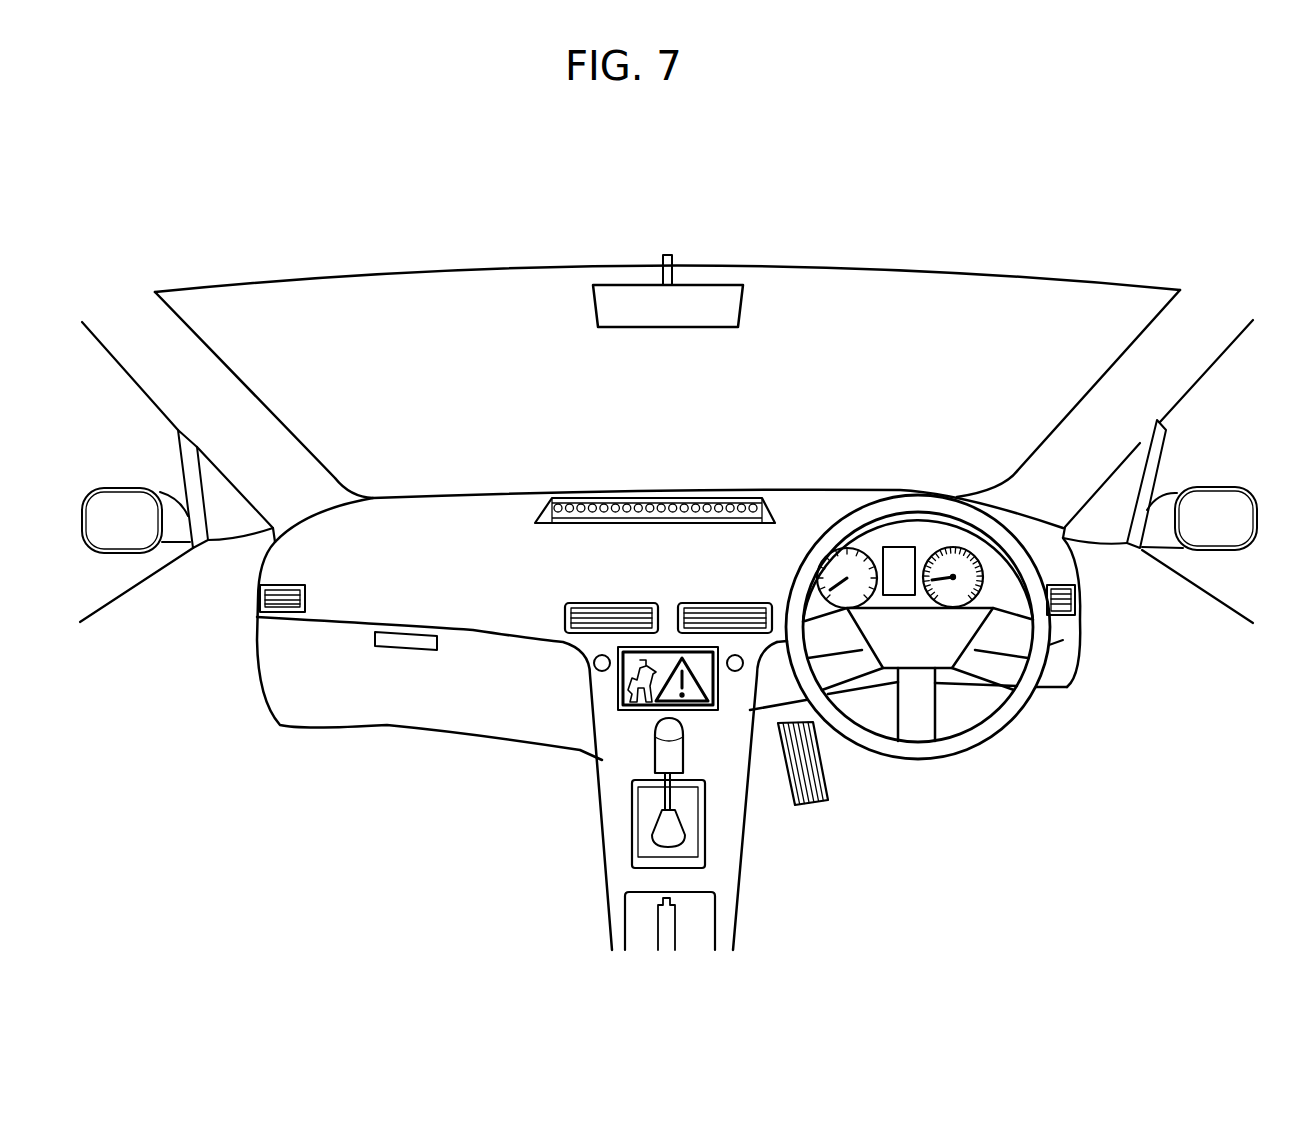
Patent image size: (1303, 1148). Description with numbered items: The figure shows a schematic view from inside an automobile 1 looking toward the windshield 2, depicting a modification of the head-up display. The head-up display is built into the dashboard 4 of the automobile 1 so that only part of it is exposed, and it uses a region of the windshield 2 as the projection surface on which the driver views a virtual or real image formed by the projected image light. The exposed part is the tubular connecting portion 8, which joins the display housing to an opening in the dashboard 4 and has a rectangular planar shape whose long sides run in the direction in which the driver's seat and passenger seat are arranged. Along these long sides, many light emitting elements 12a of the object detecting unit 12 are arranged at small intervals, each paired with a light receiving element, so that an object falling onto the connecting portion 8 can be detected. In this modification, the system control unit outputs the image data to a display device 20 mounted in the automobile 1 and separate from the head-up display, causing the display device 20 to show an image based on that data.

The automobile 1 is at (318, 187).
The windshield 2 is at (907, 287).
The dashboard 4 is at (437, 500).
The connecting portion 8 is at (542, 508).
The object detecting unit 12 is at (572, 505).
The light emitting element 12a is at (655, 508).
The display device 20 is at (630, 712).